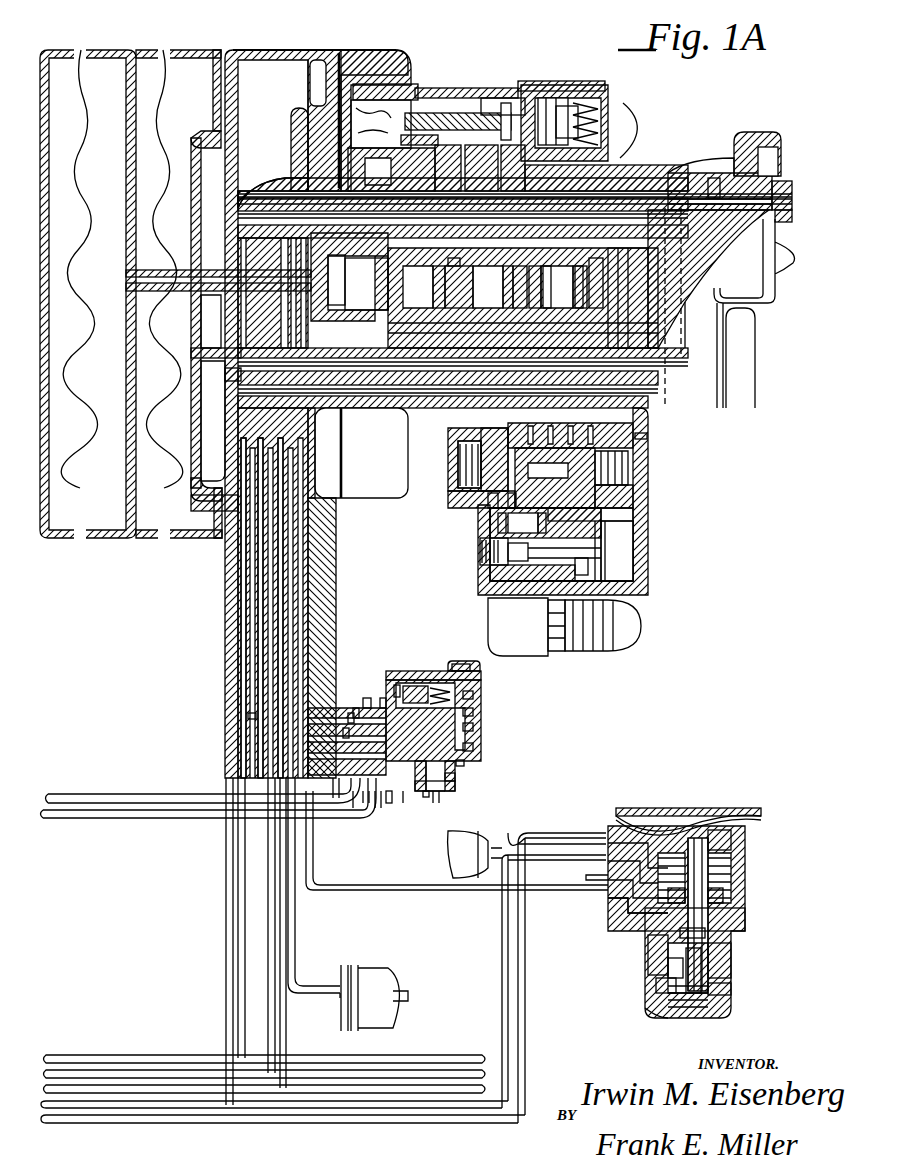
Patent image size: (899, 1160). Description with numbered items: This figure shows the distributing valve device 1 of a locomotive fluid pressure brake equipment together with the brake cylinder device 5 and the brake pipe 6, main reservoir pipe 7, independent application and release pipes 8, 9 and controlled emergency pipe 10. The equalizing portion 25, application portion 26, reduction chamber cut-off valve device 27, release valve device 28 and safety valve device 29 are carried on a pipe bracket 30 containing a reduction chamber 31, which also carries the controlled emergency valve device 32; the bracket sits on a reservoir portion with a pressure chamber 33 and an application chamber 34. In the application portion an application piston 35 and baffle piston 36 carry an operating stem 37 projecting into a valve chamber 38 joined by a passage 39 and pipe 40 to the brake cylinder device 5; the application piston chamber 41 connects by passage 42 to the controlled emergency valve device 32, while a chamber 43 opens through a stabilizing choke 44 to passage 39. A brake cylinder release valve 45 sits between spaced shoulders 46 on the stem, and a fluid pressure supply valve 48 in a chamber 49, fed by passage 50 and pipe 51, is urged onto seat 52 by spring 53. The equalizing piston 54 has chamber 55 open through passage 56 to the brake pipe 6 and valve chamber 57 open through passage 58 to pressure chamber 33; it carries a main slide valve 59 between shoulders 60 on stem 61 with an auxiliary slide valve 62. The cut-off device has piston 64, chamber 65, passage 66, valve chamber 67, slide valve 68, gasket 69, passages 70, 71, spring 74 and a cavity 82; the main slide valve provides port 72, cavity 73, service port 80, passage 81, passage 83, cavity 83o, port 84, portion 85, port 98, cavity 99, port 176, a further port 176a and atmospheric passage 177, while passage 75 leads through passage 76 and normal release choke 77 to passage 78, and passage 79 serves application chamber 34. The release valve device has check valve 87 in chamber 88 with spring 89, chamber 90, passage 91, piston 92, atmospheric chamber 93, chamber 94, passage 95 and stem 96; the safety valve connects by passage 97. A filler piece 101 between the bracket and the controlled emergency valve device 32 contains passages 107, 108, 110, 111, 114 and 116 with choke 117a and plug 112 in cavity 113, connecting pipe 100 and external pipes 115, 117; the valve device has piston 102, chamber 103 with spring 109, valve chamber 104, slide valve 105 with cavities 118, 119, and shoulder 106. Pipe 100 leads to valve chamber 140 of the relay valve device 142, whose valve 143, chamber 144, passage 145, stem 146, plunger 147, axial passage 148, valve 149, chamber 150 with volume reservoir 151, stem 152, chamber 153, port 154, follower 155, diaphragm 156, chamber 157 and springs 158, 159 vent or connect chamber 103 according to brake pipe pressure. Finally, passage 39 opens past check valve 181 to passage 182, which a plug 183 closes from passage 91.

The distributing valve device 1 is at (325, 42).
The brake cylinder device 5 is at (382, 968).
The brake pipe 6 is at (442, 1116).
The main reservoir pipe 7 is at (82, 1062).
The independent application pipe 8 is at (128, 1062).
The independent release pipe 9 is at (165, 1082).
The controlled emergency pipe 10 is at (132, 1100).
The equalizing portion 25 is at (783, 265).
The application portion 26 is at (475, 74).
The reduction chamber cut-off valve device 27 is at (652, 484).
The release valve device 28 is at (639, 536).
The safety valve device 29 is at (627, 642).
The pipe bracket 30 is at (267, 38).
The reduction chamber 31 is at (243, 55).
The controlled emergency valve device 32 is at (481, 670).
The pressure chamber 33 is at (103, 55).
The application chamber 34 is at (175, 57).
The application piston 35 is at (358, 90).
The baffle piston 36 is at (365, 92).
The operating stem 37 is at (432, 105).
The valve chamber 38 is at (505, 100).
The brake cylinder passage 39 is at (455, 105).
The pipe 40 is at (287, 930).
The application piston chamber 41 is at (293, 100).
The passage 42 is at (296, 530).
The chamber 43 is at (385, 62).
The stabilizing choke 44 is at (391, 169).
The brake cylinder release valve 45 is at (362, 103).
The spaced shoulders 46 is at (393, 130).
The fluid pressure supply valve 48 is at (560, 98).
The chamber 49 is at (536, 90).
The passage 50 is at (268, 180).
The pipe 51 is at (268, 905).
The seat 52 is at (520, 73).
The spring 53 is at (583, 95).
The equalizing piston 54 is at (705, 172).
The chamber 55 is at (708, 170).
The passage 56 is at (580, 250).
The valve chamber 57 is at (600, 190).
The passage 58 is at (175, 262).
The main slide valve 59 is at (388, 270).
The spaced shoulders 60 is at (660, 246).
The stem 61 is at (638, 232).
The auxiliary slide valve 62 is at (512, 258).
The piston 64 is at (480, 512).
The chamber 65 is at (440, 490).
The passage 66 is at (450, 442).
The valve chamber 67 is at (625, 487).
The slide valve 68 is at (474, 540).
The gasket 69 is at (500, 521).
The passage 70 is at (452, 460).
The passage 71 is at (620, 440).
The port 72 is at (428, 272).
The cavity 73 is at (575, 258).
The spring 74 is at (480, 492).
The passage 75 is at (640, 428).
The passage 76 is at (395, 402).
The normal release choke 77 is at (335, 405).
The passage 78 is at (240, 610).
The passage 79 is at (210, 342).
The service port 80 is at (500, 258).
The passage 81 is at (640, 330).
The cavity 82 is at (593, 507).
The passage 83 is at (620, 462).
The cavity 83o is at (456, 244).
The port 84 is at (592, 252).
The portion 85 is at (570, 258).
The check valve 87 is at (482, 575).
The chamber 88 is at (490, 558).
The spring 89 is at (472, 546).
The chamber 90 is at (490, 600).
The passage 91 is at (612, 195).
The piston 92 is at (582, 560).
The atmospheric chamber 93 is at (628, 587).
The chamber 94 is at (610, 550).
The passage 95 is at (265, 575).
The stem 96 is at (577, 643).
The passage 97 is at (645, 300).
The port 98 is at (528, 258).
The cavity 99 is at (537, 258).
The pipe 100 is at (376, 875).
The filler piece 101 is at (360, 690).
The piston 102 is at (465, 707).
The chamber 103 is at (465, 690).
The valve chamber 104 is at (445, 784).
The slide valve 105 is at (447, 772).
The shoulder 106 is at (465, 722).
The passage 107 is at (390, 677).
The passage 108 is at (348, 700).
The spring 109 is at (444, 662).
The passage 110 is at (343, 705).
The passage 111 is at (360, 800).
The plug 112 is at (375, 690).
The cavity 113 is at (338, 720).
The passage 114 is at (328, 792).
The pipe 115 is at (140, 786).
The passage 116 is at (360, 796).
The pipe 117 is at (115, 811).
The choke 117a is at (370, 802).
The cavity 118 is at (428, 796).
The cavity 119 is at (465, 740).
The valve chamber 140 is at (722, 1000).
The relay valve device 142 is at (763, 812).
The valve 143 is at (723, 986).
The chamber 144 is at (700, 972).
The passage 145 is at (650, 940).
The stem 146 is at (662, 962).
The plunger 147 is at (723, 950).
The axial passage 148 is at (652, 984).
The valve 149 is at (700, 940).
The chamber 150 is at (735, 910).
The volume reservoir 151 is at (445, 852).
The stem 152 is at (725, 886).
The chamber 153 is at (725, 850).
The port 154 is at (725, 868).
The follower 155 is at (735, 833).
The diaphragm 156 is at (712, 822).
The chamber 157 is at (655, 812).
The spring 158 is at (650, 880).
The spring 159 is at (683, 1005).
The port 176 is at (455, 278).
The valve 176a is at (470, 485).
The atmospheric passage 177 is at (473, 430).
The check valve 181 is at (760, 126).
The passage 182 is at (772, 208).
The plug 183 is at (707, 170).